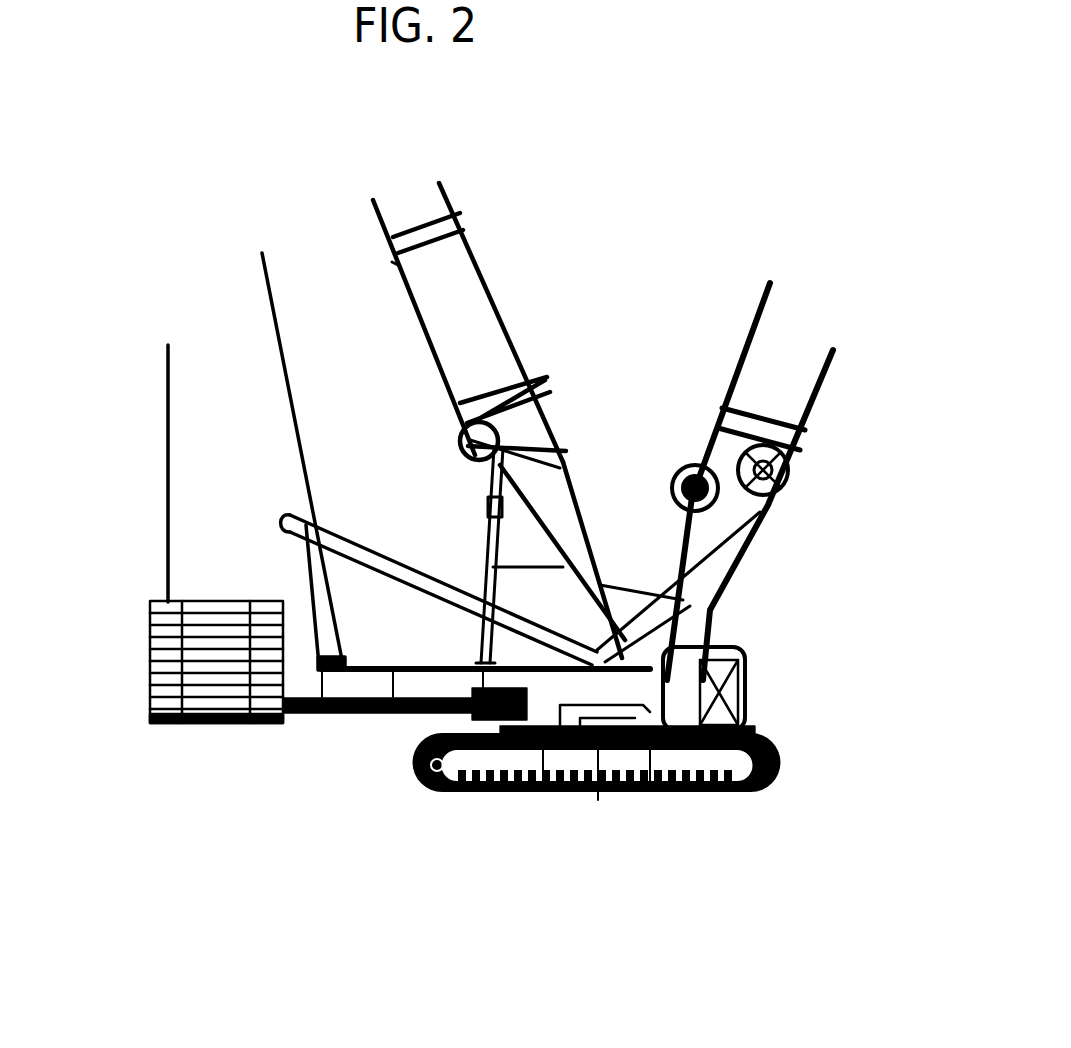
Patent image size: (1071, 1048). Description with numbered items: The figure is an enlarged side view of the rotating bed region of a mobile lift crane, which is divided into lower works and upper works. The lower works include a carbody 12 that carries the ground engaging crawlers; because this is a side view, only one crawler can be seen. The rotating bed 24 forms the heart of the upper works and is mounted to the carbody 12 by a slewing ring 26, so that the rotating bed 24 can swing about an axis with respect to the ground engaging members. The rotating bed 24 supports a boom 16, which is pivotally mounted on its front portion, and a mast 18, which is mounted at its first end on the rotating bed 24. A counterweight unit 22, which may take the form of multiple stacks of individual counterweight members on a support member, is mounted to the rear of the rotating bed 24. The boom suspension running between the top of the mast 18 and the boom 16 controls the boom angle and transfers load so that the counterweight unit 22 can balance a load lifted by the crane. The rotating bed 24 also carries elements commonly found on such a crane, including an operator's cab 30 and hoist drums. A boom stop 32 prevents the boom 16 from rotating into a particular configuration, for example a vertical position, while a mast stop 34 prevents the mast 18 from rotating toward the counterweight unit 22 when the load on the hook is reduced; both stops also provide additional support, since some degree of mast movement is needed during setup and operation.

The carbody 12 is at (743, 667).
The boom 16 is at (757, 535).
The mast 18 is at (505, 303).
The counterweight unit 22 is at (148, 720).
The rotating bed 24 is at (357, 713).
The slewing ring 26 is at (470, 730).
The operator's cab 30 is at (747, 703).
The boom stop 32 is at (639, 590).
The mast stop 34 is at (482, 535).